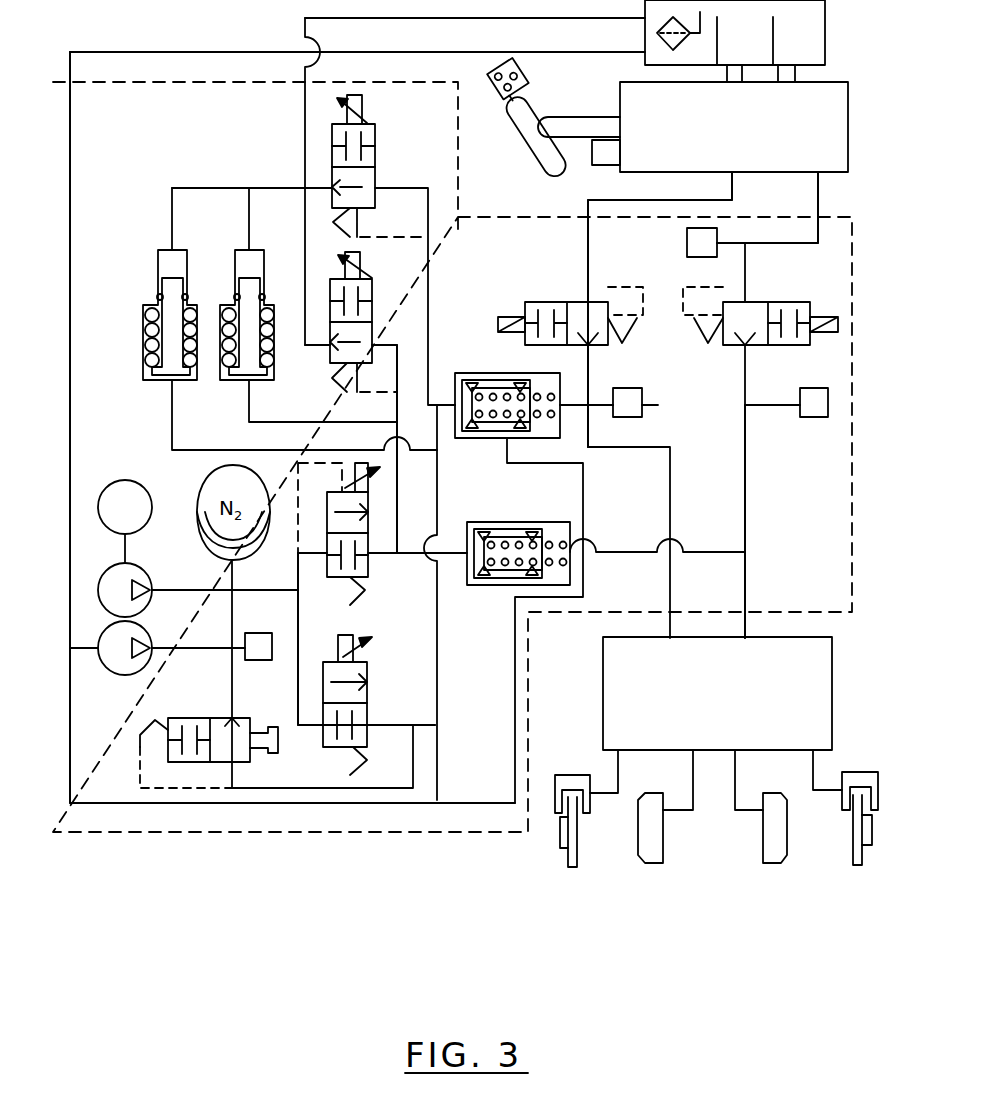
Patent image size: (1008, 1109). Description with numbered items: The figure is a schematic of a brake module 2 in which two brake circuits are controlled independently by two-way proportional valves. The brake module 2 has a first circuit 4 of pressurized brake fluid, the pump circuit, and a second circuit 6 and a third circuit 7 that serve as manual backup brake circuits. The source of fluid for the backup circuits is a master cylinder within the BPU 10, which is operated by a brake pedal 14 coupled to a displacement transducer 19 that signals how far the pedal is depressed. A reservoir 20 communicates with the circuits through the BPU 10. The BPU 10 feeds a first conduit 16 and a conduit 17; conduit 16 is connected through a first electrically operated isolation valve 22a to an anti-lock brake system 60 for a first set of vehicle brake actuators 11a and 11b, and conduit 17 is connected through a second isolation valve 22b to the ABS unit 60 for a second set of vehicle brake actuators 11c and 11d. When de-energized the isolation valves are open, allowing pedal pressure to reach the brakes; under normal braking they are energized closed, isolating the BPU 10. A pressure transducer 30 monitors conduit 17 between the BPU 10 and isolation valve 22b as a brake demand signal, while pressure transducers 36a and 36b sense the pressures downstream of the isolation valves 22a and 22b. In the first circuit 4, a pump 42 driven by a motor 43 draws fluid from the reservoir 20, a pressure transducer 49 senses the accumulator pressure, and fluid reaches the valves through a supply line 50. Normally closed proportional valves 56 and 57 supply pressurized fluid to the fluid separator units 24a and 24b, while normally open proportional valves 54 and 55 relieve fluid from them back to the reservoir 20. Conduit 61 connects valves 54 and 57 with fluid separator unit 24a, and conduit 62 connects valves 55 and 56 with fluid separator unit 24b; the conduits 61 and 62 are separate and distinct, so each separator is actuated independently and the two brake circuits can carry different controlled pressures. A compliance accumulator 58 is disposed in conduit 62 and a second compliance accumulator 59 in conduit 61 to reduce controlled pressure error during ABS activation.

The brake module 2 is at (350, 832).
The first circuit of pressurized brake fluid 4 is at (245, 812).
The second circuit of pressurized brake fluid 6 is at (597, 414).
The third circuit of pressurized brake fluid 7 is at (752, 550).
The BPU 10 is at (848, 125).
The vehicle brake actuator 11a is at (572, 867).
The vehicle brake actuator 11b is at (655, 863).
The vehicle brake actuator 11c is at (775, 863).
The vehicle brake actuator 11d is at (857, 865).
The brake pedal 14 is at (528, 135).
The first conduit 16 is at (587, 257).
The conduit 17 is at (820, 195).
The displacement transducer 19 is at (607, 167).
The reservoir 20 is at (827, 30).
The first electrically operated isolation valve 22a is at (535, 302).
The second electrically operated isolation valve 22b is at (810, 298).
The fluid separator unit 24a is at (480, 372).
The fluid separator unit 24b is at (495, 588).
The pressure transducer 30 is at (687, 243).
The pressure transducer 36a is at (642, 403).
The pressure transducer 36b is at (828, 403).
The pump 42 is at (98, 585).
The motor 43 is at (98, 500).
The pressure transducer 49 is at (262, 660).
The supply line 50 is at (298, 612).
The two-way normally open proportional valve 54 is at (332, 135).
The two-way normally open proportional valve 55 is at (330, 280).
The two-way normally closed proportional valve 56 is at (327, 500).
The two-way normally closed proportional valve 57 is at (325, 665).
The compliance accumulator 58 is at (222, 322).
The second compliance accumulator 59 is at (145, 322).
The anti-lock brake system 60 is at (833, 683).
The conduit 61 is at (428, 280).
The conduit 62 is at (397, 352).